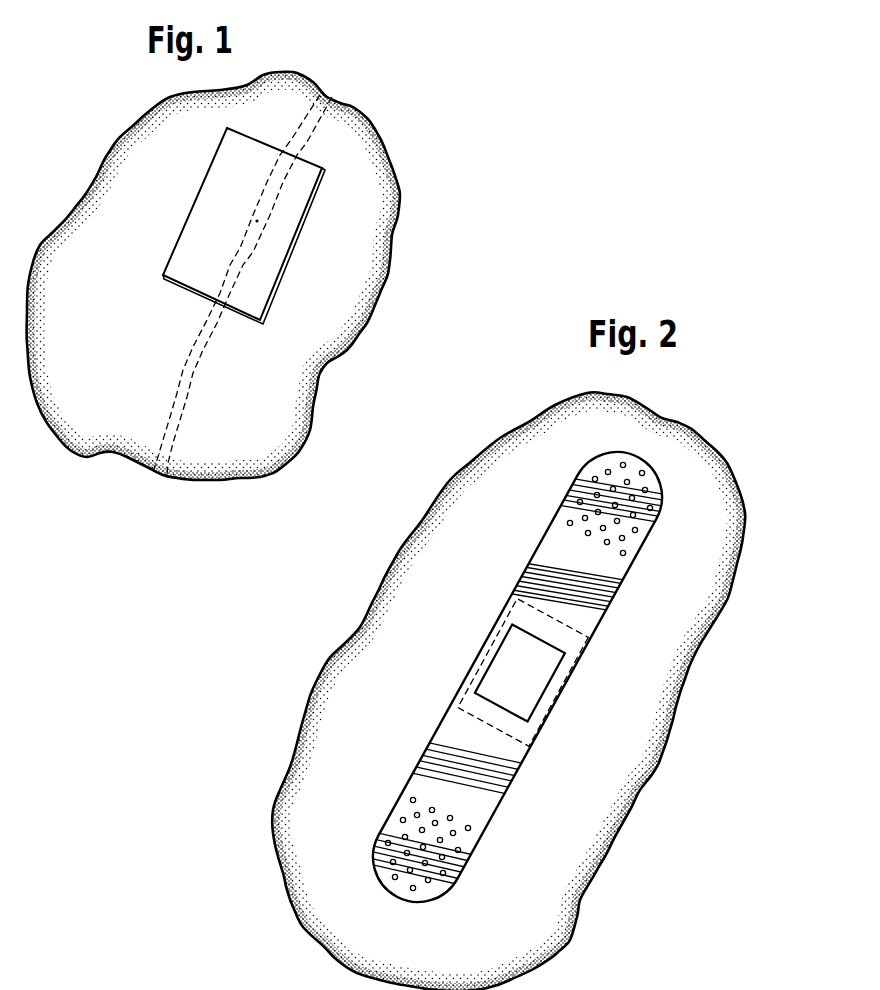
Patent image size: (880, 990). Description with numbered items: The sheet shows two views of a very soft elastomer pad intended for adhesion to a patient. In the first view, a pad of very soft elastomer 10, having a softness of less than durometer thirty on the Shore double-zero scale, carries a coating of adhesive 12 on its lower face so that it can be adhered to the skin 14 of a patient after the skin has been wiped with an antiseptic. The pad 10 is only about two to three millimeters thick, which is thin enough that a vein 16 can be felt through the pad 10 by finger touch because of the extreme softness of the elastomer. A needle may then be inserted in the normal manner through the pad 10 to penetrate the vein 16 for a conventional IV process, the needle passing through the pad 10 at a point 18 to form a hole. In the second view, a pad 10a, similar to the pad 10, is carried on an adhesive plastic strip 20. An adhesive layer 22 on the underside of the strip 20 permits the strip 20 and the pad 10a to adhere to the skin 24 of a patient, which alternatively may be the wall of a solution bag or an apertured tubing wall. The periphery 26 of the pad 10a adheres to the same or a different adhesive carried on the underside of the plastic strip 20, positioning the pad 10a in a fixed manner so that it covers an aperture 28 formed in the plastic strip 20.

In FIG. 1, the pad of very soft elastomer 10 is at (293, 208).
In FIG. 1, the coating of adhesive 12 is at (233, 277).
In FIG. 1, the skin 14 is at (258, 414).
In FIG. 1, the vein 16 is at (273, 165).
In FIG. 1, the point 18 is at (257, 221).
In FIG. 2, the pad 10a is at (525, 677).
In FIG. 2, the adhesive plastic strip 20 is at (633, 540).
In FIG. 2, the adhesive layer 22 is at (477, 810).
In FIG. 2, the skin 24 is at (697, 567).
In FIG. 2, the periphery 26 is at (560, 625).
In FIG. 2, the aperture 28 is at (498, 703).